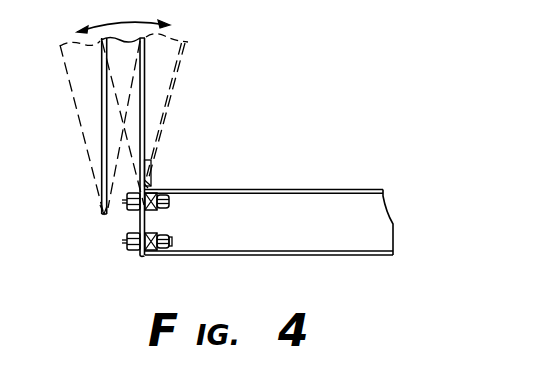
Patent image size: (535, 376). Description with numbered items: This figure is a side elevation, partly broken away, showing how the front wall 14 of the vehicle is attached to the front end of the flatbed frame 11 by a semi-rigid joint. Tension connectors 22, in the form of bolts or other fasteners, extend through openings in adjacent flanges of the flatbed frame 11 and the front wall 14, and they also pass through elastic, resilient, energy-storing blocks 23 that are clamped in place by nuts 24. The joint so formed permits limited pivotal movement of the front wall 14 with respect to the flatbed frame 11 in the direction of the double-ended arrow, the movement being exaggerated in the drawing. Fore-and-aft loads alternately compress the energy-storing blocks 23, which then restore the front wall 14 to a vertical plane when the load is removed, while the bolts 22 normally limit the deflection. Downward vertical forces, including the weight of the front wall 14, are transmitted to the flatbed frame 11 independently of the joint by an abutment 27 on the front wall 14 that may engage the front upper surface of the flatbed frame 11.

The flatbed frame 11 is at (323, 205).
The front wall 14 is at (111, 167).
The tension connectors 22 is at (125, 201).
The energy-storing blocks 23 is at (170, 196).
The nuts 24 is at (172, 241).
The abutment 27 is at (151, 175).